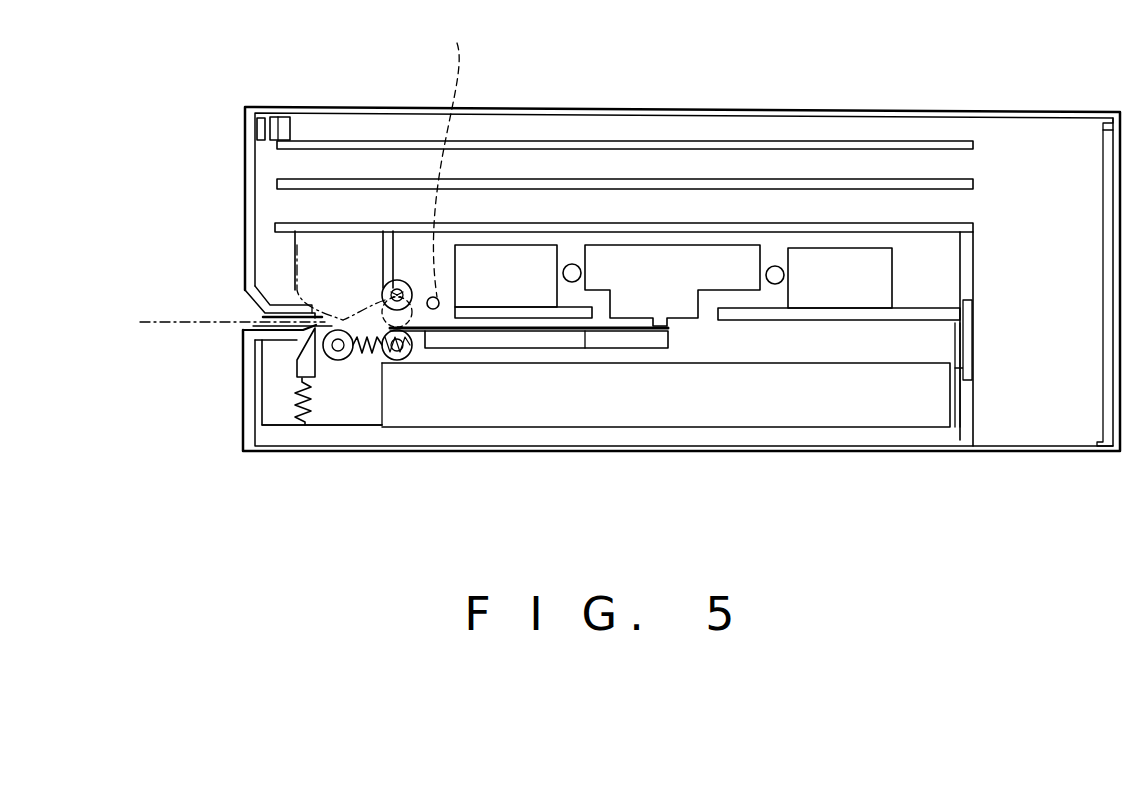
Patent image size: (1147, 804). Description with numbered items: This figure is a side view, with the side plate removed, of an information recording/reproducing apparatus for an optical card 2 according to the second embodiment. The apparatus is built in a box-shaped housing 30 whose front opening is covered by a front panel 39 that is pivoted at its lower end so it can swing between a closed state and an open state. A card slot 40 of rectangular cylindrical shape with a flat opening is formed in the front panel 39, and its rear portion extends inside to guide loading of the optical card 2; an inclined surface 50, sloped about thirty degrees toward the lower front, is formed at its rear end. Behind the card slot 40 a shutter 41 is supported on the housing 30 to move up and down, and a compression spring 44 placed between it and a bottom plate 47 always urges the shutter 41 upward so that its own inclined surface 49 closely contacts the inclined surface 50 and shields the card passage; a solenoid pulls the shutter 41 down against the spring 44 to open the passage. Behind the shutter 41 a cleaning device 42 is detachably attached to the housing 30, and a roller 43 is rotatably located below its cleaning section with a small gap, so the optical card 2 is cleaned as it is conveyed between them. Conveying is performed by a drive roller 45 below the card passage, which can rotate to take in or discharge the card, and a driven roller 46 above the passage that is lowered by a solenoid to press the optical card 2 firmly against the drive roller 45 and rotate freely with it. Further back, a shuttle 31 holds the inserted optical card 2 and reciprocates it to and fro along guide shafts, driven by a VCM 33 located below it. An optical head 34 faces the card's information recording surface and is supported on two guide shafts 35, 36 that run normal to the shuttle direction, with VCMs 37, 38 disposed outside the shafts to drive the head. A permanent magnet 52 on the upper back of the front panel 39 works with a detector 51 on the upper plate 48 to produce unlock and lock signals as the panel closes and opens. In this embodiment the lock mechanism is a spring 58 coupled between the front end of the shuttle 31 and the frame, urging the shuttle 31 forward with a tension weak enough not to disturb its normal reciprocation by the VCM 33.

The optical card 2 is at (157, 328).
The housing 30 is at (941, 110).
The shuttle 31 is at (520, 349).
The VCM (voice coil motor) 33 is at (910, 420).
The optical head 34 is at (672, 244).
The guide shaft 35 is at (574, 263).
The guide shaft 36 is at (776, 265).
The VCM 37 is at (505, 244).
The VCM 38 is at (840, 247).
The front panel 39 is at (240, 420).
The card slot 40 is at (262, 310).
The shutter 41 is at (295, 365).
The cleaning device 42 is at (297, 245).
The roller 43 is at (342, 360).
The compression spring 44 is at (313, 392).
The drive roller 45 is at (410, 363).
The driven roller 46 is at (396, 278).
The bottom plate 47 is at (287, 440).
The upper plate 48 is at (302, 110).
The inclined surface 49 is at (297, 355).
The inclined surface 50 is at (305, 292).
The detector 51 is at (277, 117).
The permanent magnet 52 is at (250, 127).
The spring 58 is at (372, 360).